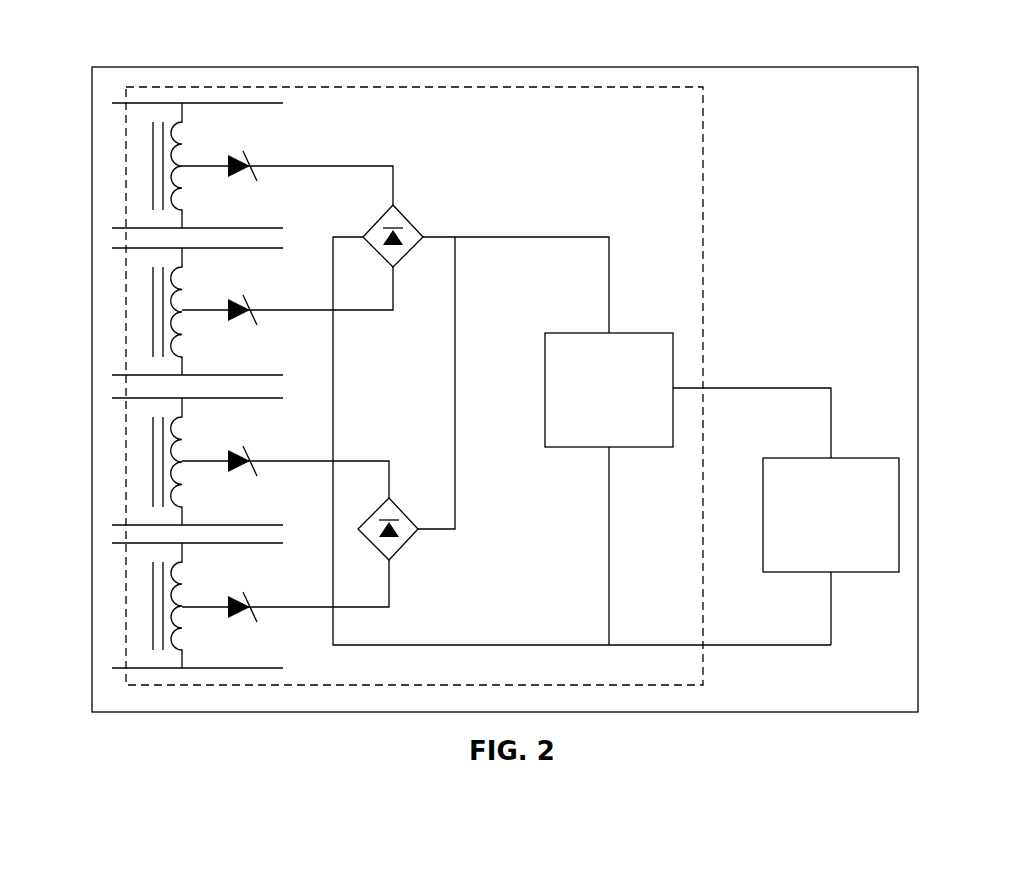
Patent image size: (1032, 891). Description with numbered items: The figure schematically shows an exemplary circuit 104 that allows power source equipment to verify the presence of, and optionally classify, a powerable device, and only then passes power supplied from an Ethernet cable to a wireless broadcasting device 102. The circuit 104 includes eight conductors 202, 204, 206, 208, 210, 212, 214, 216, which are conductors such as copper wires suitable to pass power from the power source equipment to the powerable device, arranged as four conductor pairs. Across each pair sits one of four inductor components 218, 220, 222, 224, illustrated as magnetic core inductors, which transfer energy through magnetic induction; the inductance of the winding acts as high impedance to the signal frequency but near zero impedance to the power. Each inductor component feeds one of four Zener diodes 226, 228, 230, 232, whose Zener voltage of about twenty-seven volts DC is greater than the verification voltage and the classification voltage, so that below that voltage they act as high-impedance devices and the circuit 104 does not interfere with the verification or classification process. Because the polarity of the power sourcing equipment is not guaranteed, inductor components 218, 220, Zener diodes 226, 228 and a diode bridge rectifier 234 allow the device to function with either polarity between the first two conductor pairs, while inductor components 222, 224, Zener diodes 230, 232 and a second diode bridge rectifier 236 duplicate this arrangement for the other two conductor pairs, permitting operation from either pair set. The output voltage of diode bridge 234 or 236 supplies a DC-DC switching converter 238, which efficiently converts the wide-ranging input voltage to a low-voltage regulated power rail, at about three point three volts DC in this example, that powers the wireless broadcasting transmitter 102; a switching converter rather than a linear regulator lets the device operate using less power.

The wireless broadcasting device 102 is at (862, 458).
The circuit 104 is at (640, 78).
The conductor 202 is at (147, 103).
The conductor 204 is at (140, 228).
The conductor 206 is at (145, 249).
The conductor 208 is at (147, 375).
The conductor 210 is at (147, 399).
The conductor 212 is at (140, 525).
The conductor 214 is at (142, 544).
The conductor 216 is at (138, 668).
The inductor component 218 is at (124, 159).
The inductor component 220 is at (124, 304).
The inductor component 222 is at (124, 452).
The inductor component 224 is at (124, 601).
The Zener diode 226 is at (250, 189).
The Zener diode 228 is at (250, 334).
The Zener diode 230 is at (250, 486).
The Zener diode 232 is at (250, 628).
The diode bridge rectifier 234 is at (418, 206).
The diode bridge rectifier 236 is at (412, 560).
The DC-DC switching converter 238 is at (638, 333).